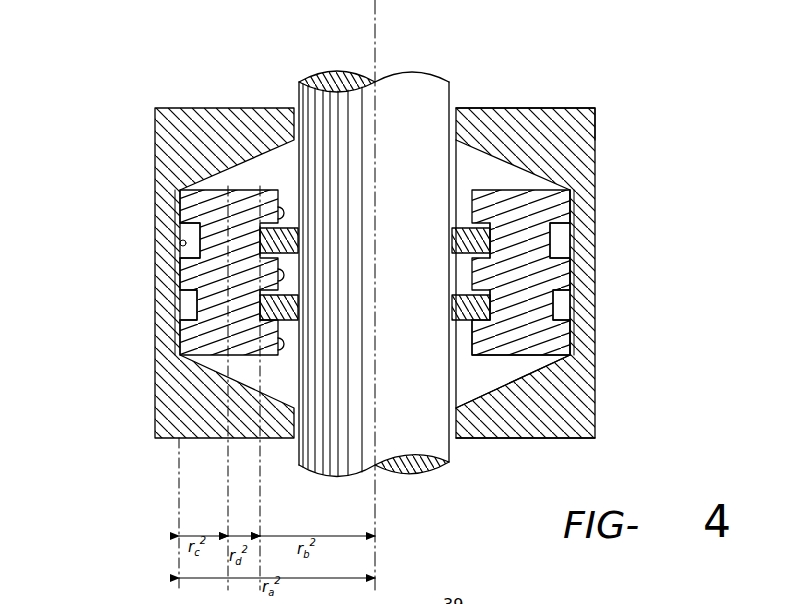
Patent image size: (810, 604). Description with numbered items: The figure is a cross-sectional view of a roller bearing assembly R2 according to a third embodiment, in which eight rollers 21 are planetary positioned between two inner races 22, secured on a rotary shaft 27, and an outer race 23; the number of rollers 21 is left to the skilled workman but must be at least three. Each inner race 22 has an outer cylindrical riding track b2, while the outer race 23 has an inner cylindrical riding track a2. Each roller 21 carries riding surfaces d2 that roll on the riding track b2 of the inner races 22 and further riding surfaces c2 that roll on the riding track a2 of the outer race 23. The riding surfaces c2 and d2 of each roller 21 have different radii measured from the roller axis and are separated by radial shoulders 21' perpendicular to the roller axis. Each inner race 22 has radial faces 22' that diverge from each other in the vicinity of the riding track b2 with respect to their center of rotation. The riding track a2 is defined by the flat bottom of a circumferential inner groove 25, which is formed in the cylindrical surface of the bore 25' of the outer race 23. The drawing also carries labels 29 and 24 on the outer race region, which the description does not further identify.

The rotary shaft 27 is at (385, 88).
The right housing (upper portion) 29 is at (578, 158).
The outer race 23 is at (592, 405).
The roller bearing assembly R2 is at (590, 88).
The roller 21 is at (562, 272).
The radial shoulder 21' is at (623, 257).
The right housing inner wall 24 is at (597, 300).
The circumferential inner groove 25 is at (562, 345).
The inner race 22 is at (473, 269).
The radial face 22' is at (535, 271).
The bore 25' is at (455, 260).
The riding surface c2 is at (180, 190).
The outer cylindrical riding track b2 is at (176, 218).
The inner cylindrical riding track a2 is at (186, 248).
The riding surface d2 is at (162, 238).